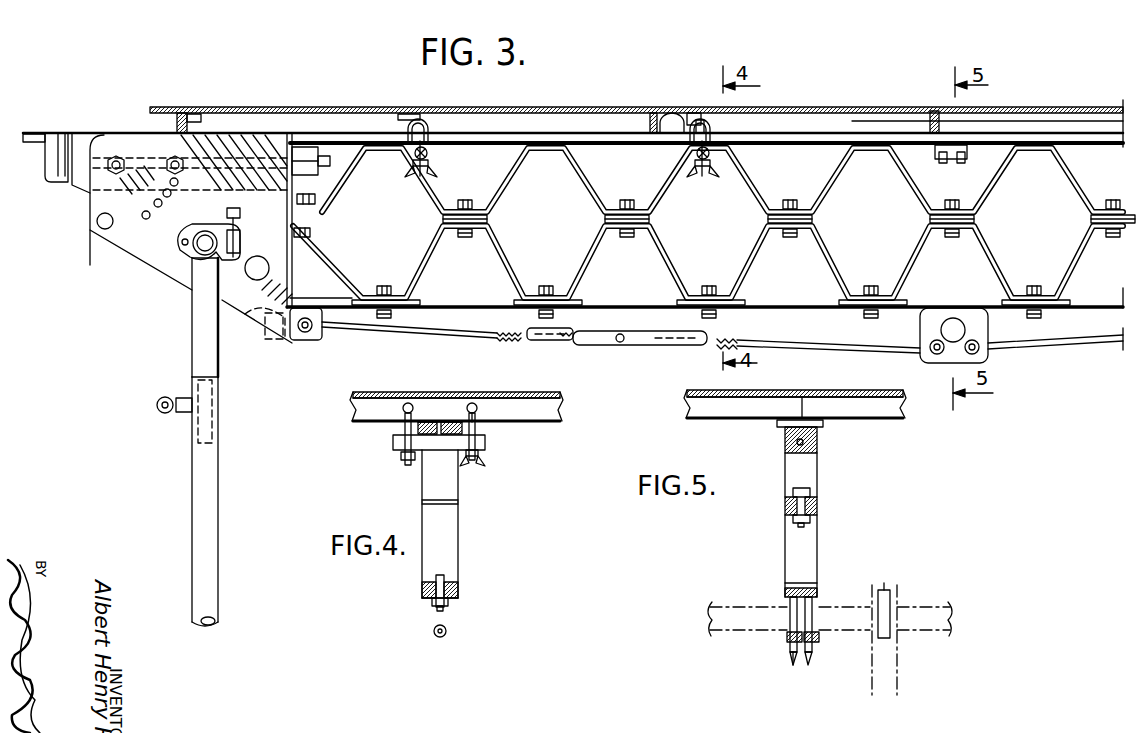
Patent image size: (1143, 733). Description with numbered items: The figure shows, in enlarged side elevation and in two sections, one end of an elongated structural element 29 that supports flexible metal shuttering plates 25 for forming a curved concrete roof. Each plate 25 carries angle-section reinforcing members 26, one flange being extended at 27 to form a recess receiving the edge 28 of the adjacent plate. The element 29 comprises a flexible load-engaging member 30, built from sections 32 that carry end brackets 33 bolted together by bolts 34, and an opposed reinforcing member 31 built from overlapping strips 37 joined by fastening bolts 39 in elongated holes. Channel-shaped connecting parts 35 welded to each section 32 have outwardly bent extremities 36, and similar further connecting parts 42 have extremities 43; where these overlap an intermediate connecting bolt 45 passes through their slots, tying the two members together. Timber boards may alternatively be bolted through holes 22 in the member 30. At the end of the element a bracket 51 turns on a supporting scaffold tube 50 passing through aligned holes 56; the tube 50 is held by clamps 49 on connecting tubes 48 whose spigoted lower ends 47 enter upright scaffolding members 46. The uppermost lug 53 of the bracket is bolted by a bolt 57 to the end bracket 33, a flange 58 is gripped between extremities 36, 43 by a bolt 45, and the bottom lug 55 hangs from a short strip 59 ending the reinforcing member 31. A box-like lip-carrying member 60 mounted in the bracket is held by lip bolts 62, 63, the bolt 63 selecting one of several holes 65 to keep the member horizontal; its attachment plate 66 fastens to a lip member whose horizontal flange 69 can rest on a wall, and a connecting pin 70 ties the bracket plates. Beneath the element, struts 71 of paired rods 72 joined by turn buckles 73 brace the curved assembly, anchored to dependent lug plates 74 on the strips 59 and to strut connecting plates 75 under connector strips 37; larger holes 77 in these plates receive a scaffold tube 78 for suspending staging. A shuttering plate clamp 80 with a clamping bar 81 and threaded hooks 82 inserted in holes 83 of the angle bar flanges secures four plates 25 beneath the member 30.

In FIG. 4, the holes 22 is at (445, 421).
In FIG. 3, the shuttering plate 25 is at (458, 112).
In FIG. 4, the shuttering plate 25 is at (540, 393).
In FIG. 5, the shuttering plate 25 is at (801, 397).
In FIG. 3, the reinforcing members 26 is at (195, 118).
In FIG. 3, the extended flange 27 is at (694, 114).
In FIG. 3, the edge of adjacent shuttering plate sheet 28 is at (668, 114).
In FIG. 3, the structural element 29 is at (852, 133).
In FIG. 3, the load-engaging member 30 is at (782, 145).
In FIG. 4, the load-engaging member 30 is at (428, 420).
In FIG. 5, the load-engaging member 30 is at (777, 422).
In FIG. 3, the reinforcing member 31 is at (832, 305).
In FIG. 3, the load-engaging member section 32 is at (519, 138).
In FIG. 3, the brackets 33 is at (305, 152).
In FIG. 5, the brackets 33 is at (818, 433).
In FIG. 3, the bolts 34 is at (950, 163).
In FIG. 5, the bolts 34 is at (797, 443).
In FIG. 3, the connecting parts 35 is at (512, 178).
In FIG. 4, the connecting parts 35 is at (447, 493).
In FIG. 5, the connecting parts 35 is at (774, 476).
In FIG. 3, the extremities 36 is at (466, 203).
In FIG. 3, the reinforcing member strips 37 is at (468, 304).
In FIG. 5, the reinforcing member strips 37 is at (797, 592).
In FIG. 3, the fastening bolt 39 is at (546, 286).
In FIG. 4, the fastening bolt 39 is at (450, 574).
In FIG. 3, the further connecting parts 42 is at (436, 240).
In FIG. 4, the further connecting parts 42 is at (441, 530).
In FIG. 5, the further connecting parts 42 is at (800, 538).
In FIG. 3, the extremities 43 is at (315, 231).
In FIG. 3, the intermediate connecting bolt 45 is at (303, 238).
In FIG. 5, the intermediate connecting bolt 45 is at (810, 491).
In FIG. 3, the upright tubular members 46 is at (203, 470).
In FIG. 3, the spigoted lower end 47 is at (210, 376).
In FIG. 3, the connecting tube 48 is at (207, 347).
In FIG. 3, the clamp 49 is at (207, 262).
In FIG. 3, the supporting scaffold tube 50 is at (203, 245).
In FIG. 3, the bracket 51 is at (135, 252).
In FIG. 3, the uppermost lug 53 is at (290, 140).
In FIG. 3, the bottom lug 55 is at (258, 318).
In FIG. 3, the aligned holes 56 is at (252, 256).
In FIG. 3, the bolt 57 is at (320, 161).
In FIG. 3, the flange 58 is at (318, 200).
In FIG. 3, the metal strip 59 is at (344, 306).
In FIG. 3, the lip-carrying member 60 is at (80, 186).
In FIG. 3, the lip-supporting bolt 62 is at (116, 156).
In FIG. 3, the second lip bolt 63 is at (172, 156).
In FIG. 3, the holes 65 is at (157, 232).
In FIG. 3, the attachment plate 66 is at (62, 145).
In FIG. 3, the horizontal flange 69 is at (33, 134).
In FIG. 3, the connecting pin 70 is at (98, 225).
In FIG. 3, the struts 71 is at (460, 330).
In FIG. 4, the struts 71 is at (447, 627).
In FIG. 3, the rods 72 is at (398, 327).
In FIG. 3, the turn buckle 73 is at (593, 340).
In FIG. 3, the dependent lug plates 74 is at (312, 334).
In FIG. 3, the strut connecting plates 75 is at (933, 318).
In FIG. 5, the strut connecting plates 75 is at (808, 660).
In FIG. 3, the larger holes 77 is at (966, 329).
In FIG. 5, the larger holes 77 is at (812, 608).
In FIG. 5, the scaffold tube 78 is at (750, 618).
In FIG. 3, the shuttering plate clamp 80 is at (430, 152).
In FIG. 4, the shuttering plate clamp 80 is at (443, 443).
In FIG. 4, the clamping bar 81 is at (482, 443).
In FIG. 3, the threaded hook 82 is at (422, 128).
In FIG. 4, the threaded hook 82 is at (485, 424).
In FIG. 4, the hole 83 is at (478, 410).